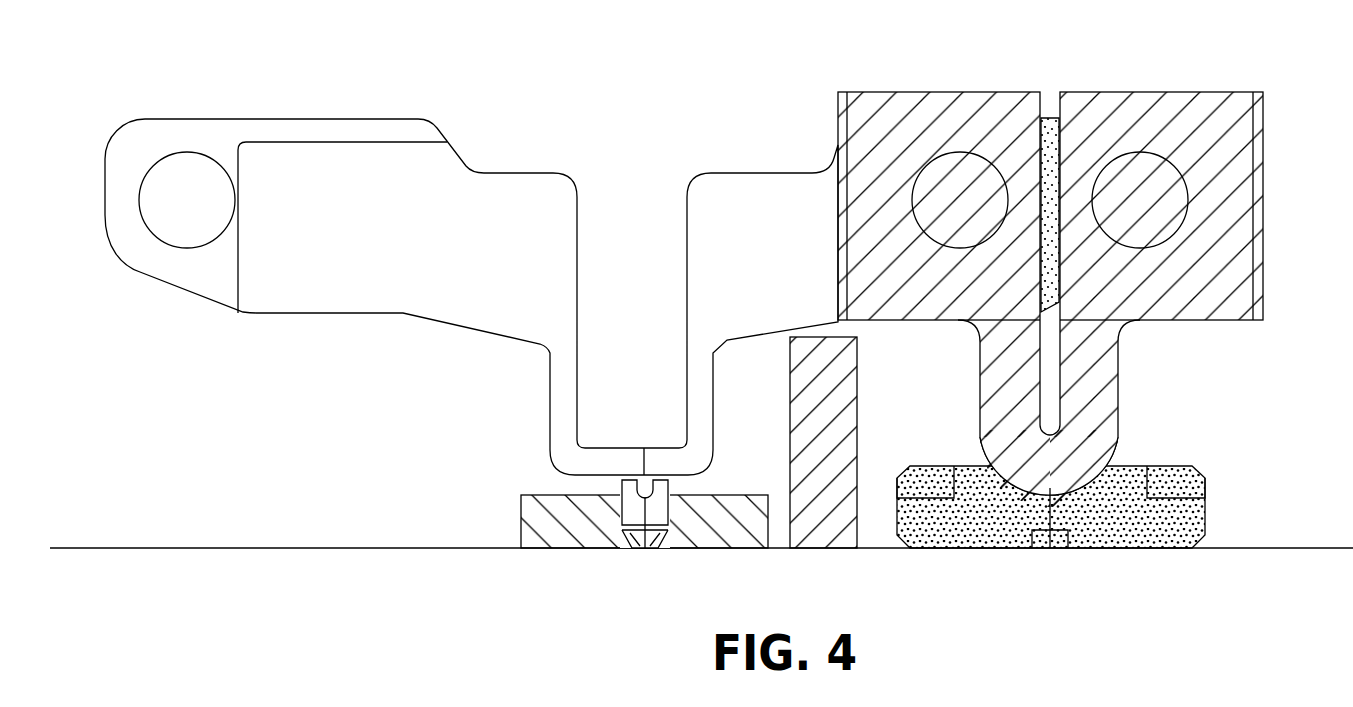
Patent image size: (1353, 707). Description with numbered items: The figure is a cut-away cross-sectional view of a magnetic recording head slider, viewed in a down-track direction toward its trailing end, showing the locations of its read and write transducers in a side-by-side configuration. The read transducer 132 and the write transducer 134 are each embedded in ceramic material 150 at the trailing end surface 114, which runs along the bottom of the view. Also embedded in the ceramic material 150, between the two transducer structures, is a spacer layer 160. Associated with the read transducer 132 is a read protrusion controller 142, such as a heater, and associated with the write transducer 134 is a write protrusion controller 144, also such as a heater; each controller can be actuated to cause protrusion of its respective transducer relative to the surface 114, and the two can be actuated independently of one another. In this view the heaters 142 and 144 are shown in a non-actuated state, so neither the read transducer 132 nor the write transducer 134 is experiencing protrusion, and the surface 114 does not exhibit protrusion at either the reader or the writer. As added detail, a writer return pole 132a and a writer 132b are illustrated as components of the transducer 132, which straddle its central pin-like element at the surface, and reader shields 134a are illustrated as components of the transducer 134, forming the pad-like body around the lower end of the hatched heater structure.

The trailing end surface 114 is at (367, 548).
The read transducer 132 is at (625, 557).
The writer return pole 132a is at (545, 540).
The writer 132b is at (633, 513).
The write transducer 134 is at (1051, 535).
The reader shields 134a is at (983, 523).
The read protrusion controller 142 is at (430, 180).
The write protrusion controller 144 is at (1200, 290).
The ceramic material 150 is at (307, 44).
The spacer layer 160 is at (832, 500).